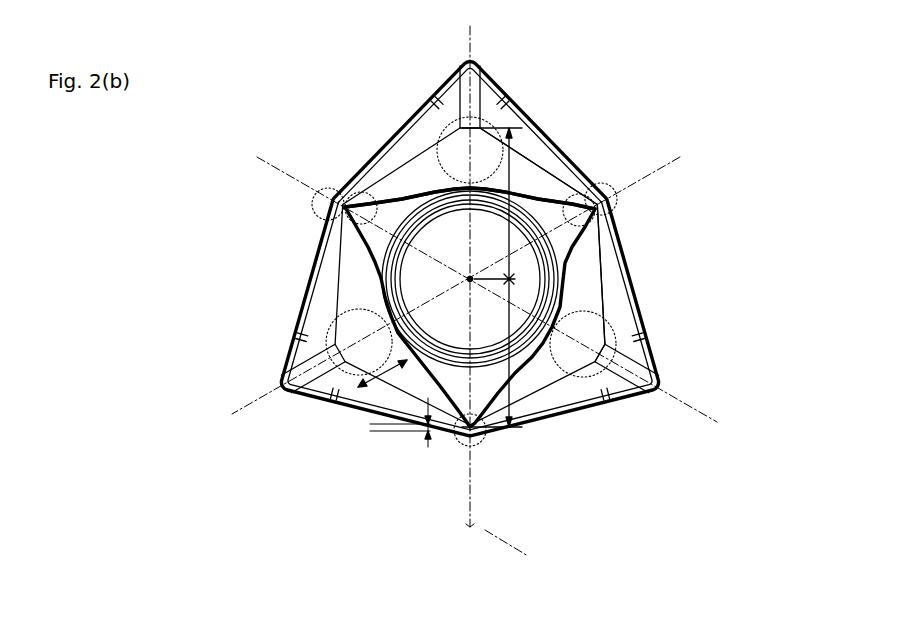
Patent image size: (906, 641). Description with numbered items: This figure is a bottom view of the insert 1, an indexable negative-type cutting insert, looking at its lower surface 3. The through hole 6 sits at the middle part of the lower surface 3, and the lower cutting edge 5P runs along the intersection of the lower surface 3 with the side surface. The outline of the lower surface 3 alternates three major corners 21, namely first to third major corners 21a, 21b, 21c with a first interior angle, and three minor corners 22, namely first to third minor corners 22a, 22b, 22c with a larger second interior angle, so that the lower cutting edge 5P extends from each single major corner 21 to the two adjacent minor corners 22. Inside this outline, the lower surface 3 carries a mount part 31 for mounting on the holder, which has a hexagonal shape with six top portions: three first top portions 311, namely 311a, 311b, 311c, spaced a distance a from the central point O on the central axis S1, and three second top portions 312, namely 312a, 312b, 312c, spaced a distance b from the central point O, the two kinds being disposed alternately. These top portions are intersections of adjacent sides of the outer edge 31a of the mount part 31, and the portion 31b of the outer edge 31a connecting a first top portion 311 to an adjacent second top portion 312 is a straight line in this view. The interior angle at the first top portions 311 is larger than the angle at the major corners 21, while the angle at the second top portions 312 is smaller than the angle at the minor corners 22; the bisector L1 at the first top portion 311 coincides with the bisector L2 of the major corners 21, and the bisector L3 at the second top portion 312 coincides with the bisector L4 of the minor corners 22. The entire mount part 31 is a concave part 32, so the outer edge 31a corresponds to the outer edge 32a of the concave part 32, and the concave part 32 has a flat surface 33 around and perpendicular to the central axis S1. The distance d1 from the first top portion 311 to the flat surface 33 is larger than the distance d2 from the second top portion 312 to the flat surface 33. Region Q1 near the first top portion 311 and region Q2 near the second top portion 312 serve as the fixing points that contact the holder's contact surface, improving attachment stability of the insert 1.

The insert 1 is at (681, 71).
The lower surface 3 is at (632, 402).
The lower cutting edge 5P is at (322, 400).
The through hole 6 is at (383, 270).
The major corners 21 is at (497, 247).
The first major corner 21a is at (660, 388).
The second major corner 21b is at (472, 64).
The third major corner 21c is at (285, 392).
The minor corners 22 is at (472, 315).
The first minor corner 22a is at (613, 193).
The second minor corner 22b is at (475, 441).
The third minor corner 22c is at (331, 192).
The mount part 31 is at (430, 105).
The concave part 32 is at (398, 152).
The outer edge of the mount part 31a is at (552, 128).
The outer edge of the concave part 32a is at (601, 275).
The portion of the outer edge 31b is at (562, 150).
The flat surface 33 is at (377, 190).
The first top portions 311 is at (408, 255).
The first top portion 311a is at (598, 400).
The first top portion 311b is at (456, 102).
The first top portion 311c is at (304, 350).
The second top portions 312 is at (458, 373).
The second top portion 312a is at (612, 212).
The second top portion 312b is at (462, 441).
The second top portion 312c is at (325, 208).
The region Q1 is at (440, 142).
The region Q2 is at (620, 203).
The bisector L1 is at (474, 268).
The bisector L2 is at (474, 268).
The bisector L3 is at (472, 356).
The bisector L4 is at (472, 356).
The central axis S1 is at (348, 278).
The central point O is at (466, 279).
The distance a is at (495, 277).
The distance b is at (495, 277).
The distance d1 is at (385, 374).
The distance d2 is at (388, 422).